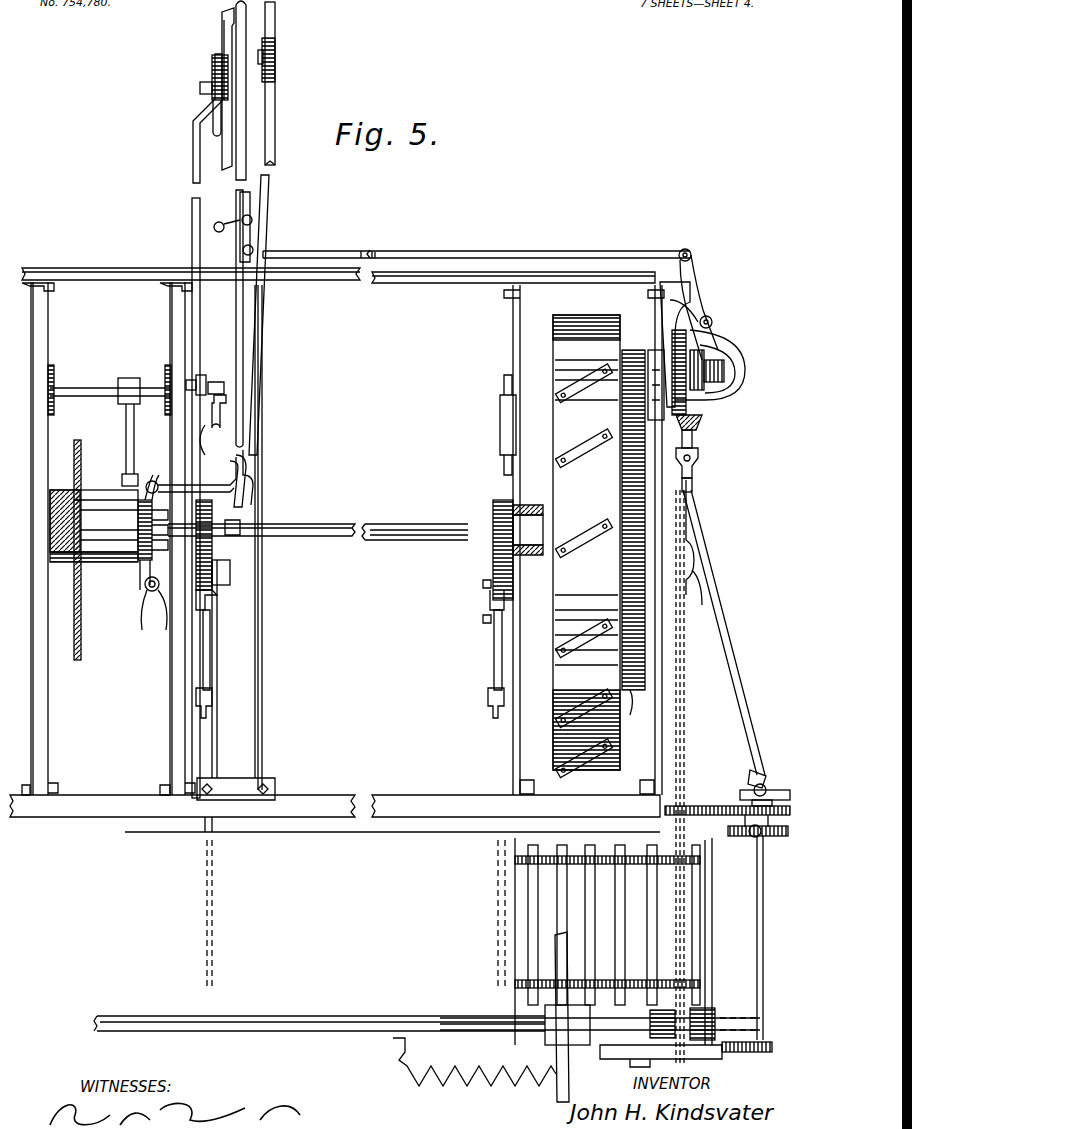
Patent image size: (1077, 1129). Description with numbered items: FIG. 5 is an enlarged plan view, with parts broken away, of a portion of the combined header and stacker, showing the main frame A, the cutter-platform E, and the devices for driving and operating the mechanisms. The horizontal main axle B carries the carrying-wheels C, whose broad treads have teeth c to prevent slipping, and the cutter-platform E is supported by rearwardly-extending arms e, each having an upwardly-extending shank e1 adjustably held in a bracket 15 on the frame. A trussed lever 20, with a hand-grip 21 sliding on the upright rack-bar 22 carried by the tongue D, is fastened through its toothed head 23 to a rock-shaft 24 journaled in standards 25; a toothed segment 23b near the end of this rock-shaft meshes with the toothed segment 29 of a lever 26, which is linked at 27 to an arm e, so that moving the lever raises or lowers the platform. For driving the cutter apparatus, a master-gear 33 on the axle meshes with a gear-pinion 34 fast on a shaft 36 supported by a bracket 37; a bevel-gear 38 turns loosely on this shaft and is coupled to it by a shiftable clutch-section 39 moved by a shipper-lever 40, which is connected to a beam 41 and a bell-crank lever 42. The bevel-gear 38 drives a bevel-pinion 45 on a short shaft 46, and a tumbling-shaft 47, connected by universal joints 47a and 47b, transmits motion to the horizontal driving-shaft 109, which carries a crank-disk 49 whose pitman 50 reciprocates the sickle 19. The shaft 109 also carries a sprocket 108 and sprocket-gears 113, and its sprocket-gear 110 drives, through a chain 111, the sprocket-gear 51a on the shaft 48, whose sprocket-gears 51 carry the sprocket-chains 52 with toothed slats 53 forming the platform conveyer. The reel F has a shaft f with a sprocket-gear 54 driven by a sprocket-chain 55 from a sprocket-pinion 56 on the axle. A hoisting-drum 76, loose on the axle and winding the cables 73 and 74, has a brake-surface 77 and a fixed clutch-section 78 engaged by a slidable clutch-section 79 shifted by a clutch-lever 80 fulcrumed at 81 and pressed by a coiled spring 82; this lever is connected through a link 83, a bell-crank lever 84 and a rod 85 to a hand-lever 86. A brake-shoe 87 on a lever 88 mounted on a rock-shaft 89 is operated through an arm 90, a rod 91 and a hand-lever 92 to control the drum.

The rack-bar 22 is at (232, 48).
The hand-grip 21 is at (248, 24).
The hand-lever 86 is at (277, 36).
The hand-lever 92 is at (213, 103).
The rod 91 is at (192, 233).
The bell-crank lever 42 is at (252, 232).
The trussed lever 20 is at (241, 360).
The rod 85 is at (263, 320).
The beam 41 is at (490, 252).
The shipper-lever 40 is at (702, 287).
The bevel-gear 38 is at (688, 323).
The bracket 37 is at (735, 355).
The shaft 36 is at (722, 378).
The clutch-section 39 is at (700, 405).
The bevel-pinion 45 is at (694, 432).
The short shaft 46 is at (698, 465).
The universal joint 47a is at (702, 480).
The tumbling-shaft 47 is at (728, 612).
The universal joint 47b is at (760, 770).
The gear-pinion 34 is at (636, 352).
The master-gear 33 is at (637, 710).
The rock-shaft 89 is at (95, 388).
The arm 90 is at (200, 375).
The brackets 15 is at (224, 412).
The lever 88 is at (135, 437).
The hoisting cable 73 is at (82, 465).
The hoisting cable 74 is at (82, 640).
The brake-shoe 87 is at (122, 482).
The clutch-section 78 is at (147, 481).
The link 83 is at (213, 455).
The tongue or pole D is at (253, 460).
The bell-crank lever 84 is at (245, 475).
The brake-surface 77 is at (125, 515).
The hoisting-drum 76 is at (102, 572).
The clutch-lever 80 is at (157, 530).
The coiled spring 82 is at (158, 573).
The slidable clutch-section 79 is at (147, 592).
The fulcrum 81 is at (166, 605).
The toothed head 23 is at (240, 530).
The rock-shaft 24 is at (402, 543).
The main axle B is at (385, 527).
The standards 25 is at (232, 592).
The toothed segment 29 is at (215, 614).
The lever 26 is at (212, 660).
The link 27 is at (212, 703).
The carrying-arm e is at (212, 745).
The teeth c is at (562, 387).
The carrying-wheels C is at (570, 487).
The shank e1 is at (511, 433).
The toothed segment 23b is at (492, 560).
The main frame A is at (322, 800).
The sprocket-pinion 56 is at (700, 554).
The sprocket-chain 55 is at (682, 762).
The sprocket 108 is at (772, 790).
The cutter-platform E is at (546, 835).
The sprocket-gear 51a is at (700, 800).
The sprocket-gears 113 is at (770, 829).
The chain 111 is at (762, 848).
The driving-shaft 109 is at (764, 910).
The toothed slats 53 is at (530, 917).
The sprocket-chains 52 is at (576, 853).
The sprocket-gears 51 is at (693, 870).
The sprocket-gear 110 is at (668, 860).
The shaft 48 is at (660, 927).
The sprocket-gear 54 is at (665, 1020).
The reel F is at (560, 1090).
The crank-disk 49 is at (740, 1052).
The pitman 50 is at (674, 1065).
The reel-shaft f is at (292, 1022).
The reciprocatory sickle 19 is at (392, 1045).